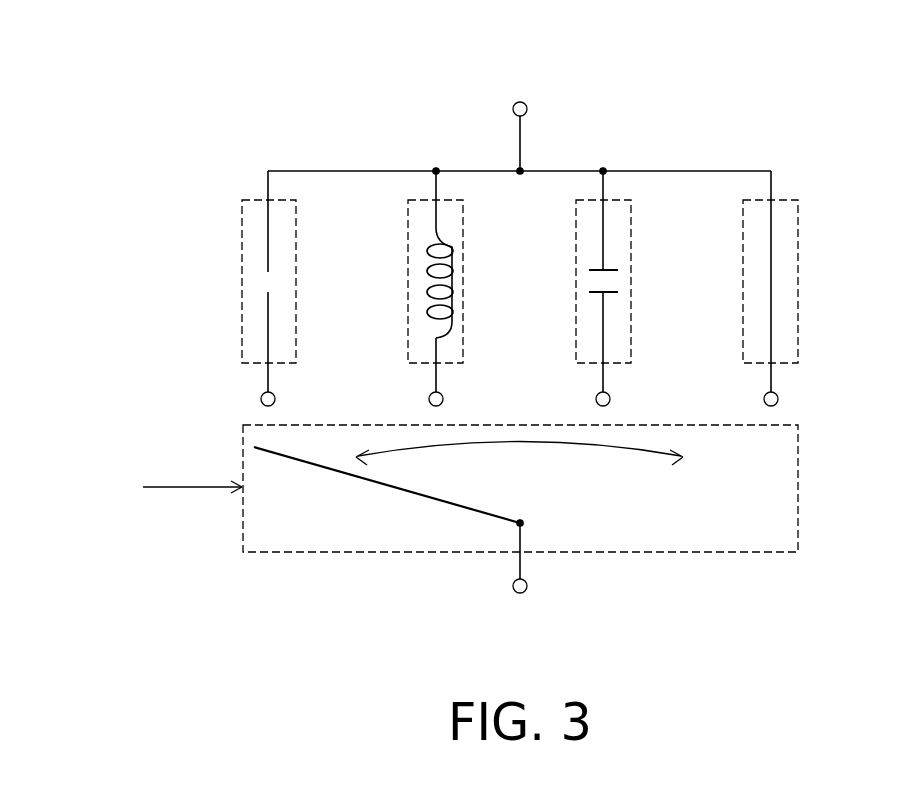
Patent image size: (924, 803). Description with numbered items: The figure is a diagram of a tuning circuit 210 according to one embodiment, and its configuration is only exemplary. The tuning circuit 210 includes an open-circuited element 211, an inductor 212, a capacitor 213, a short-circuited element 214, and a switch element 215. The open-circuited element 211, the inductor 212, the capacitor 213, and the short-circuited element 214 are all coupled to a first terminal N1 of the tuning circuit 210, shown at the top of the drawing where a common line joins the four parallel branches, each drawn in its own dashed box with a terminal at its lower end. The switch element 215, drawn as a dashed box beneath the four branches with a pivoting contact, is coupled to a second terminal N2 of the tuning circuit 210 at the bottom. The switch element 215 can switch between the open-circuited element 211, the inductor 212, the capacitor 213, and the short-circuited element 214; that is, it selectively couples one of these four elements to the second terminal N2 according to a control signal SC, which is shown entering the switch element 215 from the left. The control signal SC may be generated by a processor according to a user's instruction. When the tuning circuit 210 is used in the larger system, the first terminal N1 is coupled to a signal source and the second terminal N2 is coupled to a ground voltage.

The tuning circuit 210 is at (122, 69).
The open-circuited element 211 is at (298, 282).
The inductor 212 is at (465, 282).
The capacitor 213 is at (633, 282).
The short-circuited element 214 is at (800, 282).
The switch element 215 is at (800, 486).
The first terminal N1 is at (525, 104).
The second terminal N2 is at (519, 593).
The control signal SC is at (167, 489).